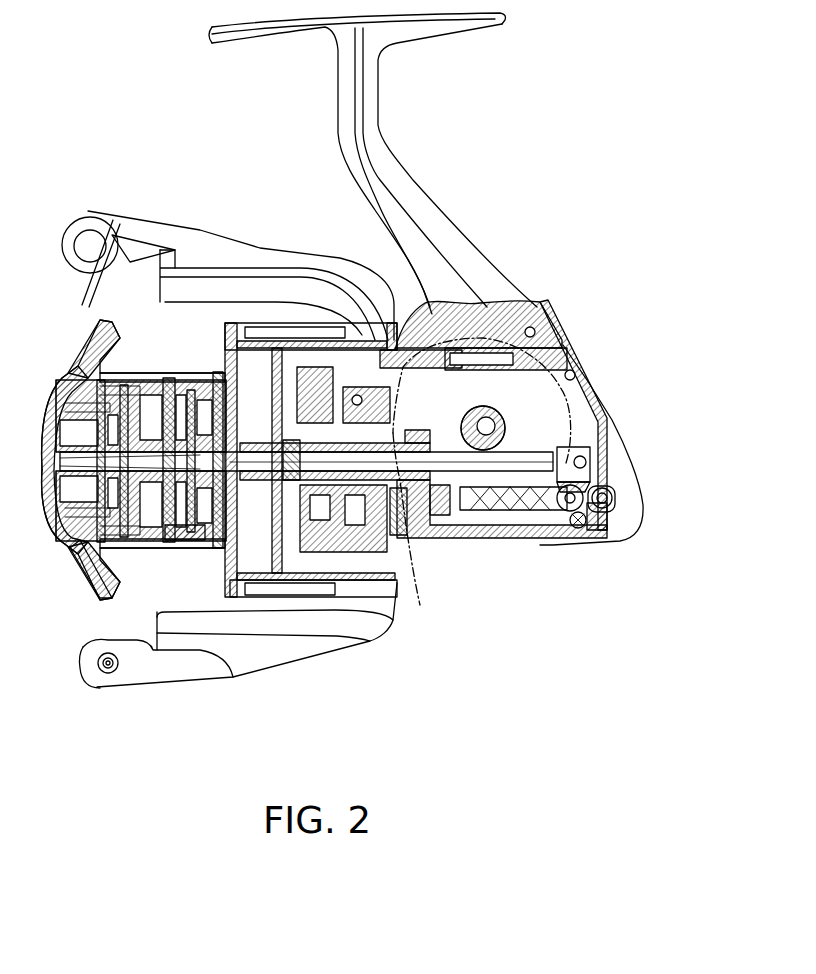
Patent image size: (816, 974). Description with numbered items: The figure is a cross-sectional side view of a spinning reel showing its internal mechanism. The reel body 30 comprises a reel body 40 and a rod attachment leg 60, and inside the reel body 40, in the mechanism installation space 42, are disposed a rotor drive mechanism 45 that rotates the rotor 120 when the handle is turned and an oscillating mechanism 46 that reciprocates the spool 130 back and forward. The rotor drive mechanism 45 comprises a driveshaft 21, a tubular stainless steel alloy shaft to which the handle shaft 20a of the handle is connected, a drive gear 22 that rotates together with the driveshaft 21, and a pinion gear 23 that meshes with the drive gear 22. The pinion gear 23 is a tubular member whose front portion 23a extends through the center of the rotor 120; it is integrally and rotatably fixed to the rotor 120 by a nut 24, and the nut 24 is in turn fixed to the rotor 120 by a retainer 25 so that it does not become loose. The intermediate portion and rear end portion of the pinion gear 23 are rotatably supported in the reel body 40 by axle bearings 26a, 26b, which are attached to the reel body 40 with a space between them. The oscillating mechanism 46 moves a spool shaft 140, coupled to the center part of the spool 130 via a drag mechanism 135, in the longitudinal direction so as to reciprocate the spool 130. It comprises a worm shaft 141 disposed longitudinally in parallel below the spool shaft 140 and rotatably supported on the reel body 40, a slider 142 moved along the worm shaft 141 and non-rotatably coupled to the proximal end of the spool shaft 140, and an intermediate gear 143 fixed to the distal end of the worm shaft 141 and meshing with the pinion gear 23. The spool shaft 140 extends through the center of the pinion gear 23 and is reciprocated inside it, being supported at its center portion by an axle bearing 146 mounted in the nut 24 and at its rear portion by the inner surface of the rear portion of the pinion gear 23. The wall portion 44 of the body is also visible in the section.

The handle shaft 20a is at (483, 408).
The driveshaft 21 is at (476, 416).
The drive gear 22 is at (516, 389).
The pinion gear 23 is at (407, 445).
The front portion 23a is at (318, 560).
The nut 24 is at (223, 550).
The retainer 25 is at (228, 382).
The axle bearing 26a is at (396, 598).
The axle bearing 26b is at (450, 500).
The reel body 30 is at (528, 399).
The reel body 40 is at (607, 397).
The mechanism installation space 42 is at (533, 430).
The body rear wall 44 is at (612, 420).
The rotor drive mechanism 45 is at (558, 358).
The oscillating mechanism 46 is at (530, 520).
The rod attachment leg 60 is at (447, 213).
The rotor 120 is at (363, 447).
The spool 130 is at (124, 472).
The drag mechanism 135 is at (87, 560).
The spool shaft 140 is at (490, 462).
The worm shaft 141 is at (567, 532).
The slider 142 is at (592, 468).
The intermediate gear 143 is at (405, 540).
The axle bearing 146 is at (180, 540).